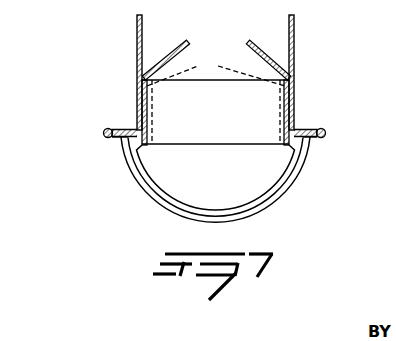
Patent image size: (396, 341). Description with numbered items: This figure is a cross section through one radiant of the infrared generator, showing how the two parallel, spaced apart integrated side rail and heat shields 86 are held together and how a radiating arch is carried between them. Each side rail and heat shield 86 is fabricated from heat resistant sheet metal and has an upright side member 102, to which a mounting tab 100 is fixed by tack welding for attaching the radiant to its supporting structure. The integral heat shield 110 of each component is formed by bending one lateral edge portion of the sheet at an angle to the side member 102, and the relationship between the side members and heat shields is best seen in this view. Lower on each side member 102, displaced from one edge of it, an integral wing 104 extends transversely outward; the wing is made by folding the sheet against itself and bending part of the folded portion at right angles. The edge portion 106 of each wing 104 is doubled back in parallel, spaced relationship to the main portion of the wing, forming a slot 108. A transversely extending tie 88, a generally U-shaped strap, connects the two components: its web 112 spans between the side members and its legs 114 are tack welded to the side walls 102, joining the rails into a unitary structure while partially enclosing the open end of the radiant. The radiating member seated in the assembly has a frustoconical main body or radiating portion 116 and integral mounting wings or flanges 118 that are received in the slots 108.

The integrated side rail and heat shield 86 is at (119, 58).
The tie 88 is at (240, 147).
The mounting tab 100 is at (137, 27).
The side member 102 is at (149, 93).
The wing 104 is at (135, 128).
The edge portion 106 is at (131, 147).
The slot 108 is at (117, 138).
The heat shield 110 is at (247, 43).
The web 112 is at (198, 145).
The leg 114 is at (216, 101).
The main body or radiating portion 116 is at (257, 211).
The mounting wing or flange 118 is at (103, 133).